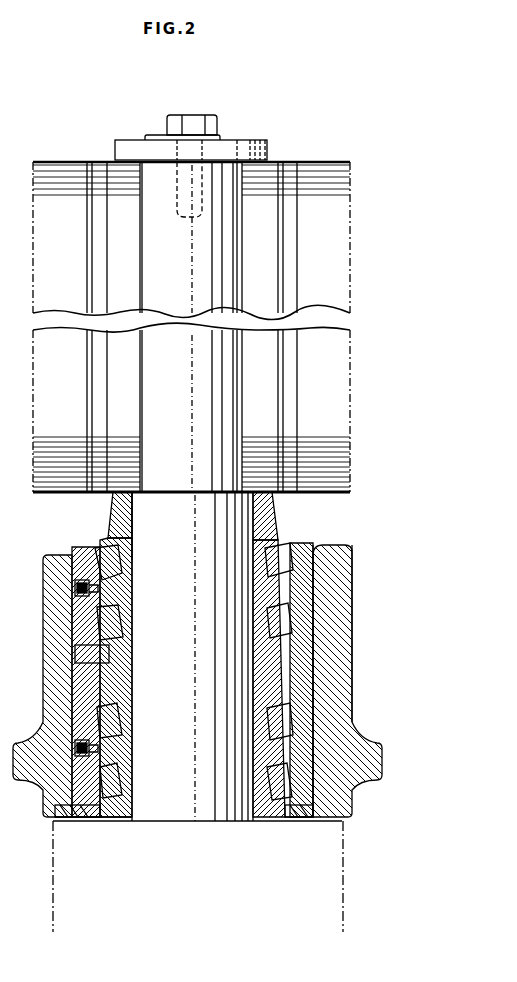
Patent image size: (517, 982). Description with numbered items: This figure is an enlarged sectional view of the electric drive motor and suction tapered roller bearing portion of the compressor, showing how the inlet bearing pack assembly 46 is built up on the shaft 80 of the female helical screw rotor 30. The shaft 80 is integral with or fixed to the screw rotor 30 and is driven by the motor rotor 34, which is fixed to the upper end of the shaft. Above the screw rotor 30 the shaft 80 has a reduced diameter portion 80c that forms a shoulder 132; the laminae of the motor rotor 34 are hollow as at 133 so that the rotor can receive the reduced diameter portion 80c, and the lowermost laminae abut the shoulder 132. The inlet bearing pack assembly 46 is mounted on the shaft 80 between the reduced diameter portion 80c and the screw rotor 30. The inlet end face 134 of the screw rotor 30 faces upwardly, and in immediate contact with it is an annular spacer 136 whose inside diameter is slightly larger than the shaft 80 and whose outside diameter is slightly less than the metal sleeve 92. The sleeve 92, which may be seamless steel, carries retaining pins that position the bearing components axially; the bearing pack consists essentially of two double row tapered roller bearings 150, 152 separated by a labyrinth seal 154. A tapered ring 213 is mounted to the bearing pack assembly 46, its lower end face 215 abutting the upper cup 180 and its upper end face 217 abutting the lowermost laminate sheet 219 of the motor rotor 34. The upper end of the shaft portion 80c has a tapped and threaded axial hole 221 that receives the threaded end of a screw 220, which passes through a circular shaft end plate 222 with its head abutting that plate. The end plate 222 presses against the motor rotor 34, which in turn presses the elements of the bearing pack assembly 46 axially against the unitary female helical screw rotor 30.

The screw 220 is at (168, 125).
The circular shaft end plate 222 is at (240, 148).
The rotor 34 is at (312, 160).
The tapped and threaded axial hole 221 is at (177, 205).
The reduced diameter portion 80c is at (185, 408).
The hollow of rotor laminae 133 is at (140, 460).
The lowermost laminate sheet 219 is at (48, 494).
The shaft 80 is at (192, 818).
The shoulder 132 is at (240, 496).
The upper end face 217 is at (135, 496).
The lower end face 215 is at (130, 548).
The double row tapered roller bearing 150 is at (96, 540).
The double row tapered roller bearing 152 is at (103, 708).
The labyrinth seal 154 is at (100, 652).
The metal sleeve 92 is at (316, 600).
The inlet bearing pack assembly 46 is at (335, 538).
The upper cup 180 is at (314, 541).
The tapered ring 213 is at (276, 500).
The annular spacer 136 is at (128, 816).
The inlet end face 134 is at (80, 820).
The screw rotor 30 is at (323, 845).